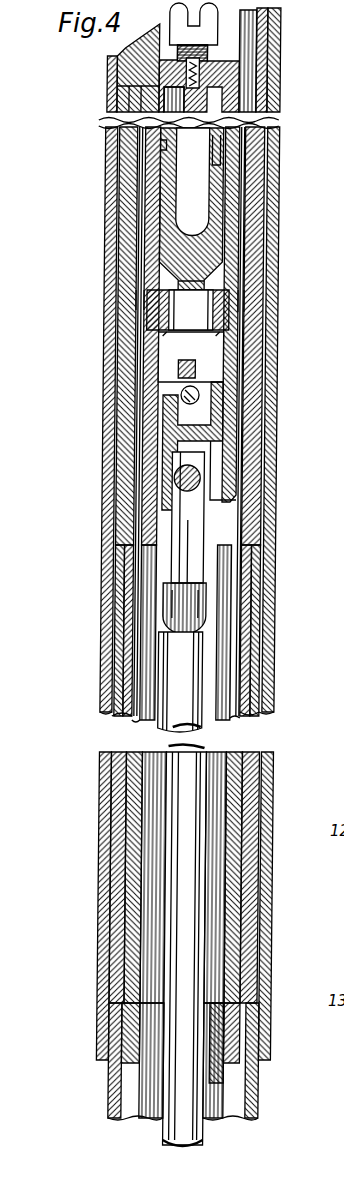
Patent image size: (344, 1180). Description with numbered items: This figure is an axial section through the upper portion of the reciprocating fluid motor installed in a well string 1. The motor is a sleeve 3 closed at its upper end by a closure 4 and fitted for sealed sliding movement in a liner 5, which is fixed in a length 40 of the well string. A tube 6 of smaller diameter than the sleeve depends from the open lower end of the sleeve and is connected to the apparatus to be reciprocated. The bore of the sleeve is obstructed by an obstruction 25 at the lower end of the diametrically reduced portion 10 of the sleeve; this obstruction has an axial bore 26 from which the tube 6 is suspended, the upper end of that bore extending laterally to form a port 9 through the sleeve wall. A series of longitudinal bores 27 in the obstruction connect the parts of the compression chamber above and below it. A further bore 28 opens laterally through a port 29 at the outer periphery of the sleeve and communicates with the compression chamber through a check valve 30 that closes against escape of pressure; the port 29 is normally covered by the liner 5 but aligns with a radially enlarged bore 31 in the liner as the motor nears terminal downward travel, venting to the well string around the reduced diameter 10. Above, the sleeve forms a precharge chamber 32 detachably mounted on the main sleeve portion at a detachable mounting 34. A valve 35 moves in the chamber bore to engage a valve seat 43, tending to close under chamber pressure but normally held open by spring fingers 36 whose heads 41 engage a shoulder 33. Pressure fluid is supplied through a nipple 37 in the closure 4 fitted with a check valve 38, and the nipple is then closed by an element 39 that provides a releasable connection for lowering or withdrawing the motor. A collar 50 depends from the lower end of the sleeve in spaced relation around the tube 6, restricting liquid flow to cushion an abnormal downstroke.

The well string 1 is at (108, 69).
The sleeve 3 is at (138, 602).
The closure 4 is at (234, 78).
The liner 5 is at (130, 674).
The tube 6 is at (300, 427).
The port 9 is at (185, 570).
The reduced diameter portion 10 is at (152, 370).
The obstruction 25 is at (148, 509).
The axial bore 26 is at (198, 560).
The longitudinal bores 27 is at (166, 516).
The bore 28 is at (200, 420).
The port 29 is at (236, 515).
The check valve 30 is at (203, 392).
The enlarged bore 31 is at (134, 300).
The precharge chamber 32 is at (109, 101).
The shoulder 33 is at (165, 146).
The detachable mounting 34 is at (240, 307).
The valve 35 is at (200, 273).
The spring fingers 36 is at (176, 160).
The nipple 37 is at (206, 62).
The check valve 38 is at (199, 90).
The closing element 39 is at (176, 18).
The length of well string 40 is at (134, 475).
The heads 41 is at (222, 142).
The valve seat 43 is at (188, 310).
The collar 50 is at (146, 1062).